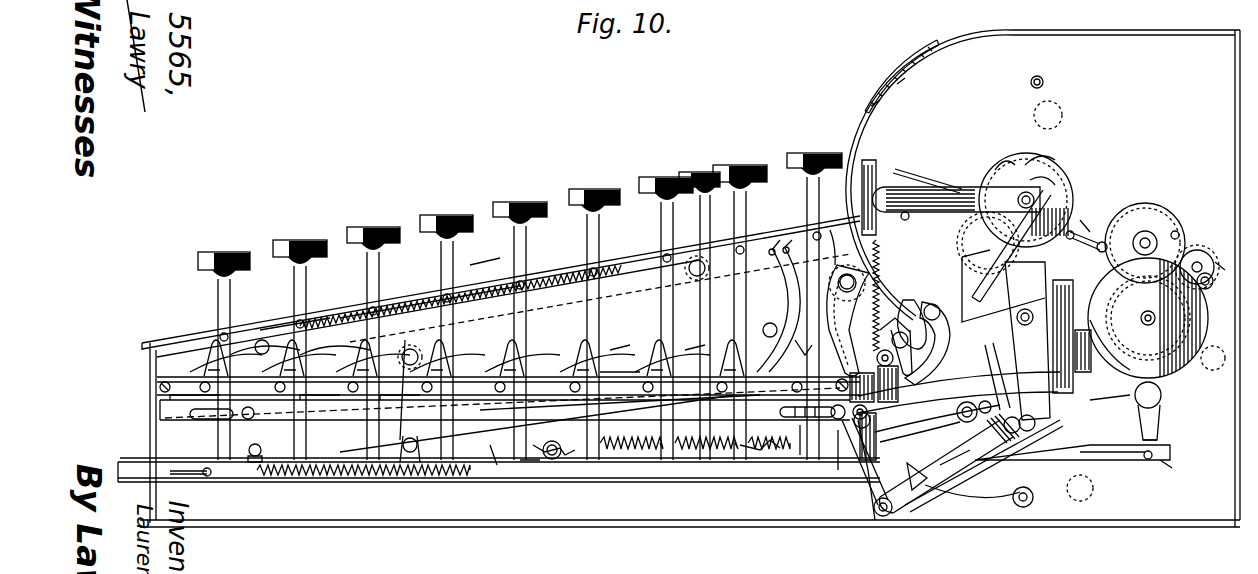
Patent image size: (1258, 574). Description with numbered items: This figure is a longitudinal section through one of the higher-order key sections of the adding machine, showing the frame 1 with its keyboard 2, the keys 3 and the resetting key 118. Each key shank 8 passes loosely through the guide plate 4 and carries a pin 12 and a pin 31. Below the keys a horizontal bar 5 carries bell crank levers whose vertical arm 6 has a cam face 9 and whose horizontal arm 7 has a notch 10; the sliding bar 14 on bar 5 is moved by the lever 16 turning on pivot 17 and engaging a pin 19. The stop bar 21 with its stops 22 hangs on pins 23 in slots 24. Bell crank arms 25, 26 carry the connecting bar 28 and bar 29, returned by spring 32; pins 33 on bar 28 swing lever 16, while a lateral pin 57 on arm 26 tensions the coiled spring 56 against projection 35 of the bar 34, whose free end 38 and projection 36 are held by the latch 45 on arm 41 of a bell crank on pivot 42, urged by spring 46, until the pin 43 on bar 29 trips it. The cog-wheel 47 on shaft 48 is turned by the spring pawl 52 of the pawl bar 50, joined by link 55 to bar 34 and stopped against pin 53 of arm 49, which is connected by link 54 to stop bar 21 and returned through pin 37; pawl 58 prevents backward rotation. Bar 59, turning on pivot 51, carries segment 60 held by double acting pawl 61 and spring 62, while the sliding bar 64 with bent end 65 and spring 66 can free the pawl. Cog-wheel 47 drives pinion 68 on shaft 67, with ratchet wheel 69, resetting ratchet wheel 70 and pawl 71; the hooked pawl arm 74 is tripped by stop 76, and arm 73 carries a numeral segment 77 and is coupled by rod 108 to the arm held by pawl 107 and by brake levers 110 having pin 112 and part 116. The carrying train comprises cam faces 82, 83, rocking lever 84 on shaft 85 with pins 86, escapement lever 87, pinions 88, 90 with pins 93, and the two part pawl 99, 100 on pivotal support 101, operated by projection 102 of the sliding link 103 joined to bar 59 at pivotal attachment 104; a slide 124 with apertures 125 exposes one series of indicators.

The frame 1 is at (150, 426).
The keyboard 2 is at (548, 268).
The keys 3 is at (300, 240).
The plate 4 is at (545, 455).
The horizontal bar 5 is at (468, 356).
The vertical arm of bell crank lever 6 is at (690, 340).
The horizontal arm of bell crank lever 7 is at (547, 350).
The key shank 8 is at (515, 258).
The cam face 9 is at (600, 348).
The notch 10 is at (600, 366).
The pin 12 is at (530, 338).
The sliding bar 14 is at (190, 372).
The lever 16 is at (770, 322).
The pivot 17 is at (675, 340).
The pin 19 is at (760, 398).
The stop bar 21 is at (158, 410).
The stops 22 is at (372, 449).
The pins 23 is at (254, 418).
The slots 24 is at (205, 419).
The bell crank lever arm 25 is at (336, 342).
The bell crank lever arm 26 is at (408, 452).
The connecting bar 28 is at (390, 308).
The bar 29 is at (497, 470).
The pin 31 is at (660, 255).
The spring 32 is at (330, 318).
The pins 33 is at (787, 246).
The bar 34 is at (893, 317).
The lateral projection 35 is at (888, 339).
The lateral projection 36 is at (937, 418).
The pin 37 is at (962, 399).
The free end of bar 38 is at (868, 440).
The bell crank arm 41 is at (840, 440).
The pivot 42 is at (805, 440).
The pin 43 is at (760, 380).
The latch 45 is at (920, 433).
The spring 46 is at (640, 452).
The cog-wheel 47 is at (1075, 232).
The shaft 48 is at (1051, 331).
The arm 49 is at (987, 380).
The pawl bar 50 is at (946, 466).
The pivot 51 is at (928, 310).
The spring pawl 52 is at (1047, 428).
The pin 53 is at (1080, 488).
The link 54 is at (957, 400).
The link 55 is at (962, 483).
The coiled spring 56 is at (869, 272).
The lateral pin 57 is at (799, 340).
The pawl 58 is at (1082, 225).
The bar 59 is at (905, 350).
The segment 60 is at (870, 501).
The double acting pawl 61 is at (915, 490).
The spring 62 is at (979, 499).
The sliding bar 64 is at (575, 460).
The bent end 65 is at (122, 462).
The spring 66 is at (342, 478).
The shaft 67 is at (1060, 185).
The pinion 68 is at (1048, 115).
The ratchet wheel 69 is at (1040, 162).
The resetting ratchet wheel 70 is at (1010, 165).
The spring actuated pawl 71 is at (1050, 178).
The arm 73 is at (885, 185).
The pawl arm 74 is at (975, 175).
The stop 76 is at (1044, 80).
The numeral segment 77 is at (900, 95).
The depressed cam faces 82 is at (1148, 322).
The raised cam faces 83 is at (1175, 380).
The rocking lever 84 is at (1180, 328).
The shaft 85 is at (1196, 288).
The pins 86 is at (1185, 248).
The escapement lever 87 is at (1217, 256).
The pinion 88 is at (1213, 358).
The pinion 90 is at (1140, 203).
The pins 93 is at (1176, 230).
The pawl part 99 is at (1160, 392).
The pawl part 100 is at (1158, 434).
The pivotal support 101 is at (1158, 420).
The projection 102 is at (1112, 445).
The sliding link 103 is at (1165, 463).
The pivotal attachment 104 is at (852, 420).
The spring actuated pawl 107 is at (1109, 399).
The rod 108 is at (1005, 270).
The brake levers 110 is at (978, 258).
The pin 112 is at (1006, 335).
The part 116 is at (922, 300).
The resetting key 118 is at (703, 172).
The slide 124 is at (878, 100).
The apertures 125 is at (905, 75).